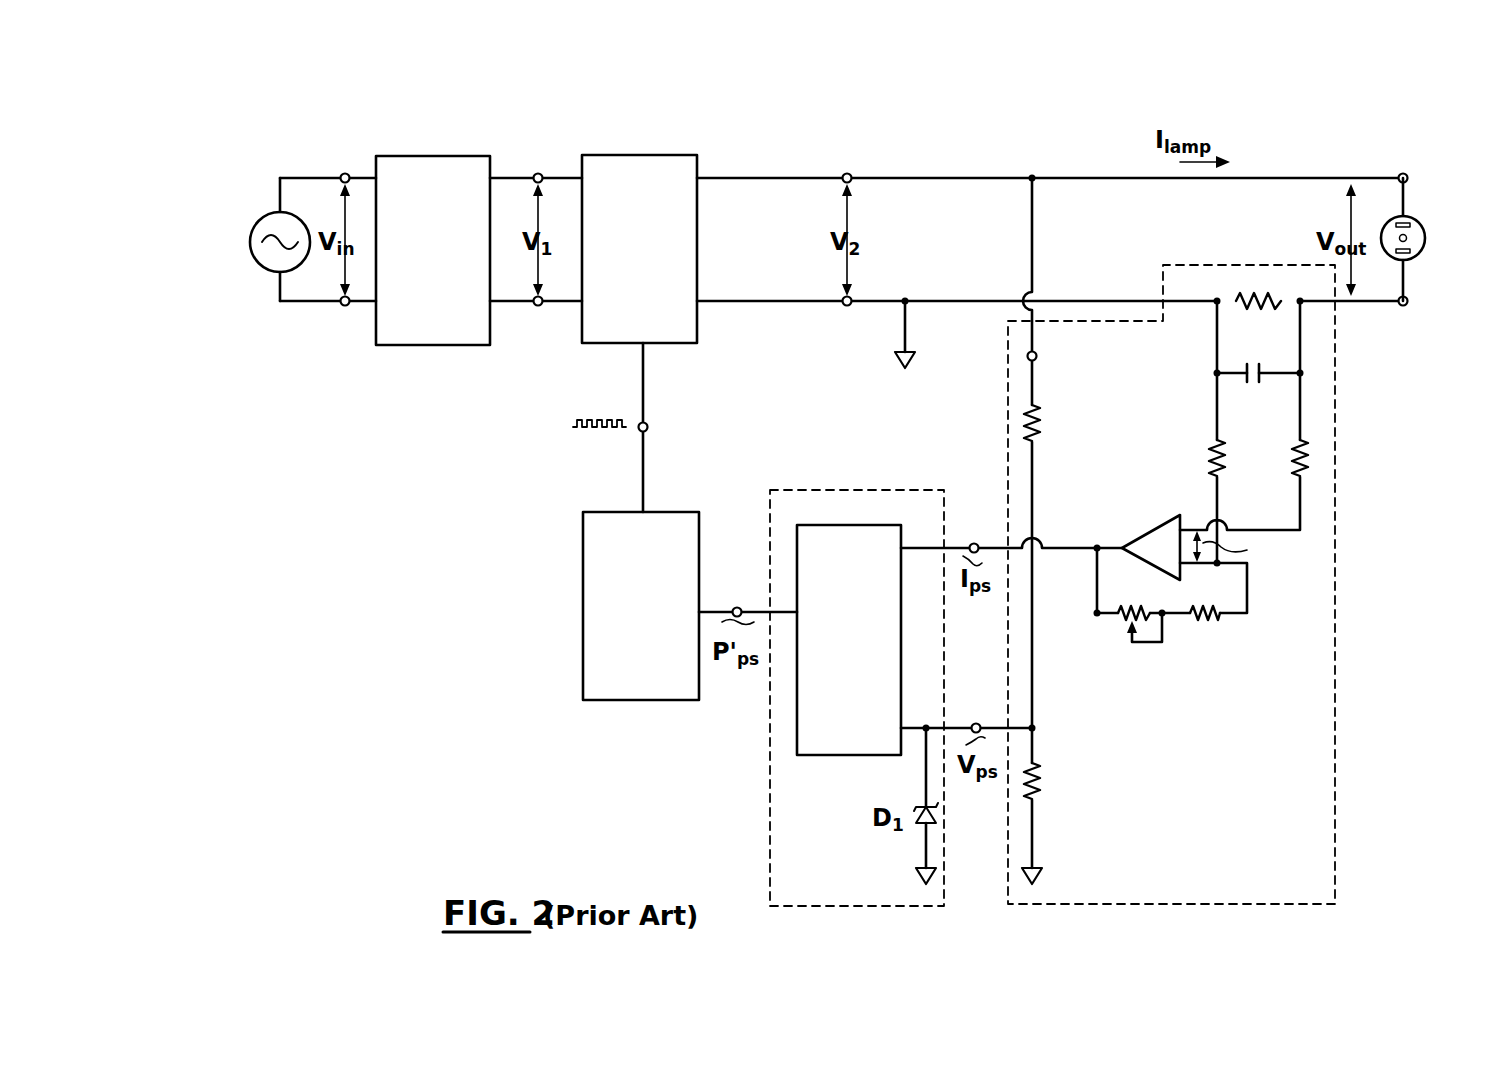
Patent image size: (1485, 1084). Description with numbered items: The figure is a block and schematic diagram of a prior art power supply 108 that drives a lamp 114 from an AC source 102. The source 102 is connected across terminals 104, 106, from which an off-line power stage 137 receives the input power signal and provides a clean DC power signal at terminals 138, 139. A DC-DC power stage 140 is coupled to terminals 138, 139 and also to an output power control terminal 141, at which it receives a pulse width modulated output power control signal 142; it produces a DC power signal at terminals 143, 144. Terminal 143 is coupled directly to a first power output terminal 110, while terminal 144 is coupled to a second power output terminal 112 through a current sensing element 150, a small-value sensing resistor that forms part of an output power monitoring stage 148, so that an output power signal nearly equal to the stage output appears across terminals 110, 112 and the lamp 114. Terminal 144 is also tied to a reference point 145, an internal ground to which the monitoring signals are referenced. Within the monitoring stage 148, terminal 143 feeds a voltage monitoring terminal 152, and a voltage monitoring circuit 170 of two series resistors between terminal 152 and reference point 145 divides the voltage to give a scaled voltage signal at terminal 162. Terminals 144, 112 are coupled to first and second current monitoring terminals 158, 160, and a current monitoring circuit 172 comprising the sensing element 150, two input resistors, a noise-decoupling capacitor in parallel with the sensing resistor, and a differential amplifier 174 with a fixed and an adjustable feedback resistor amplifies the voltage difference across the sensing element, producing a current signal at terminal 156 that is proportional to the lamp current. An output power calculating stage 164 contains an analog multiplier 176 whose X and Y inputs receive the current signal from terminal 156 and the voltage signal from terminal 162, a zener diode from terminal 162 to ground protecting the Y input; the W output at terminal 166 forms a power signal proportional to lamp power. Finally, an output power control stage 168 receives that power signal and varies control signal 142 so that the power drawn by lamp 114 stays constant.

The AC voltage source 102 is at (258, 262).
The terminal 104 is at (343, 164).
The terminal 106 is at (343, 317).
The power supply 108 is at (453, 730).
The first power output terminal 110 is at (1403, 164).
The second power output terminal 112 is at (1404, 317).
The lamp 114 is at (1422, 243).
The off-line power stage 137 is at (450, 155).
The terminal 138 is at (538, 164).
The terminal 139 is at (538, 317).
The DC-DC power stage 140 is at (643, 154).
The output power control terminal 141 is at (668, 427).
The output power control signal 142 is at (596, 434).
The terminal 143 is at (847, 164).
The terminal 144 is at (847, 317).
The reference point 145 is at (897, 362).
The output power monitoring stage 148 is at (1337, 827).
The current sensing element 150 is at (1240, 293).
The voltage monitoring terminal 152 is at (1053, 357).
The terminal 156 is at (1011, 534).
The first current monitoring terminal 158 is at (1213, 287).
The second current monitoring terminal 160 is at (1297, 287).
The terminal 162 is at (968, 715).
The output power calculating stage 164 is at (853, 489).
The terminal 166 is at (748, 598).
The output power control stage 168 is at (632, 702).
The voltage monitoring circuit 170 is at (1026, 392).
The current monitoring circuit 172 is at (1313, 500).
The differential amplifier 174 is at (1152, 532).
The analog multiplier 176 is at (815, 757).